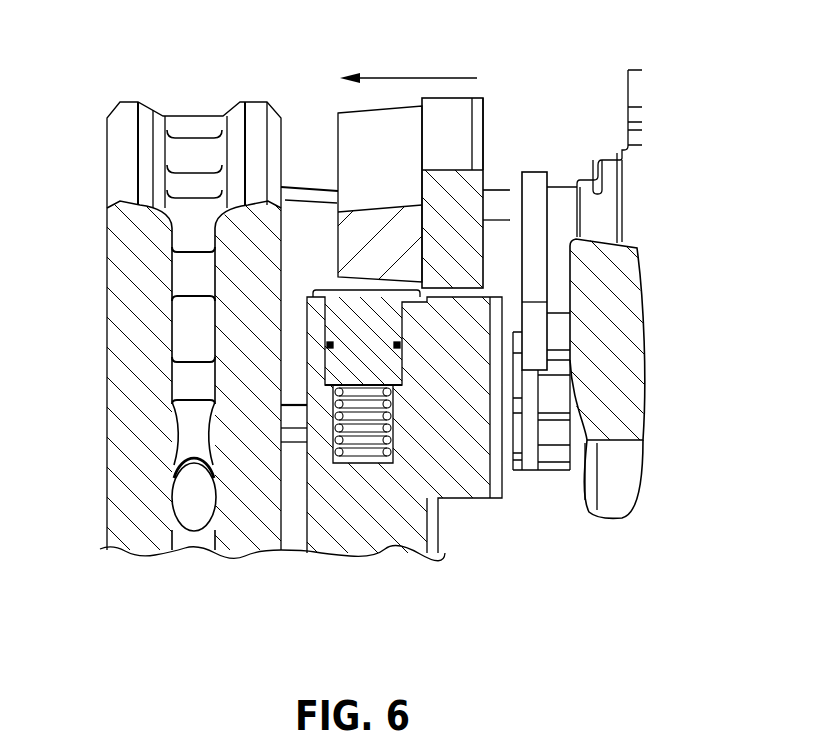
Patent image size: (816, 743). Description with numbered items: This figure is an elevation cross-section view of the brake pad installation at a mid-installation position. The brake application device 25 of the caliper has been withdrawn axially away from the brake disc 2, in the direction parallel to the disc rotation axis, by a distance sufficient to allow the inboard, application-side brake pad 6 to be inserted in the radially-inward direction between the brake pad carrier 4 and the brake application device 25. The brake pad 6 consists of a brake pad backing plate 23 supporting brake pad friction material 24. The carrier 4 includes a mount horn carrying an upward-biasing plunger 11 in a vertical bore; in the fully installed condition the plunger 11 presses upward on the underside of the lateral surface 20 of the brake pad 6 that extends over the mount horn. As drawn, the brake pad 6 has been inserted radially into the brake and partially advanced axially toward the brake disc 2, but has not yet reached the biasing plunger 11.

The brake disc 2 is at (108, 232).
The caliper mounting carrier 4 is at (377, 538).
The brake pad 6 is at (483, 133).
The upward-biasing plunger 11 is at (388, 371).
The lateral surface 20 is at (450, 288).
The brake pad backing plate 23 is at (468, 100).
The brake pad friction material 24 is at (346, 124).
The brake application device 25 is at (628, 218).